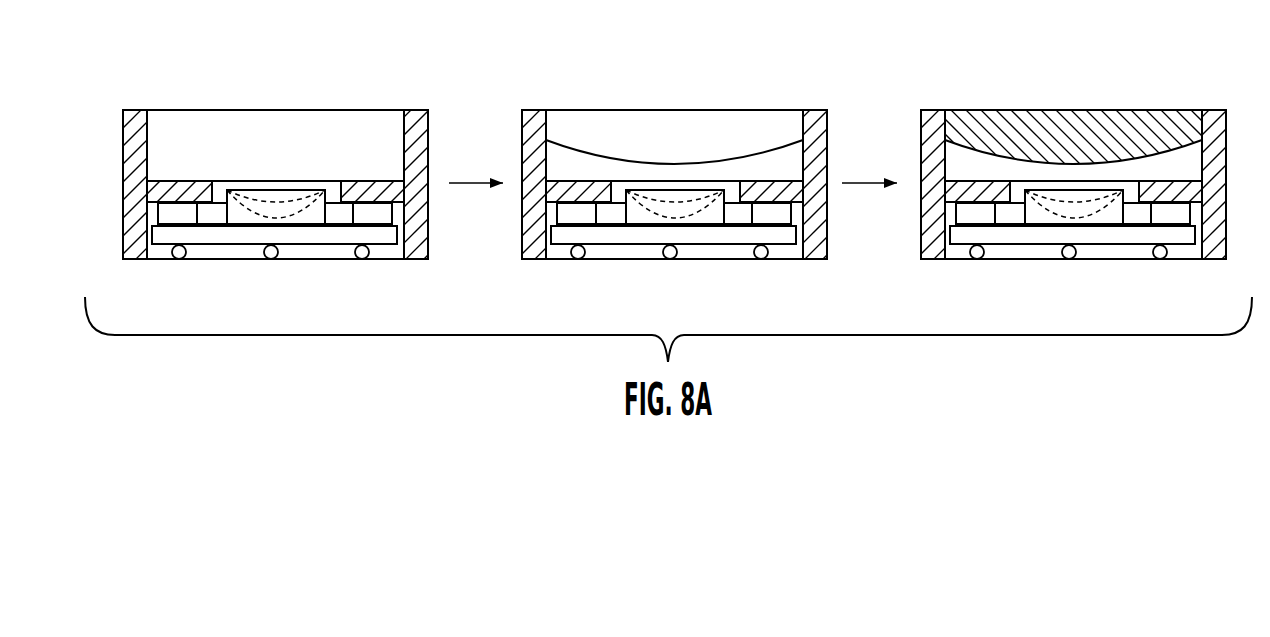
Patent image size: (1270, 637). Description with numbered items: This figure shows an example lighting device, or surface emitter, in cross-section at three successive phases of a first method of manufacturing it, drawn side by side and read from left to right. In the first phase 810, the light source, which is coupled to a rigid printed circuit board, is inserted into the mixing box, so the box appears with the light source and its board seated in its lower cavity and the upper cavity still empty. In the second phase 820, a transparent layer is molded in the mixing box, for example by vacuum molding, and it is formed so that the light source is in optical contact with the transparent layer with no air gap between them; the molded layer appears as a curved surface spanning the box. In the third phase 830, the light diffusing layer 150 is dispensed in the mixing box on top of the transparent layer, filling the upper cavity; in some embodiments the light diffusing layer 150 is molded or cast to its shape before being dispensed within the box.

The light diffusing layer 150 is at (1057, 124).
The first phase 810 is at (286, 170).
The second phase 820 is at (681, 170).
The third phase 830 is at (1030, 174).